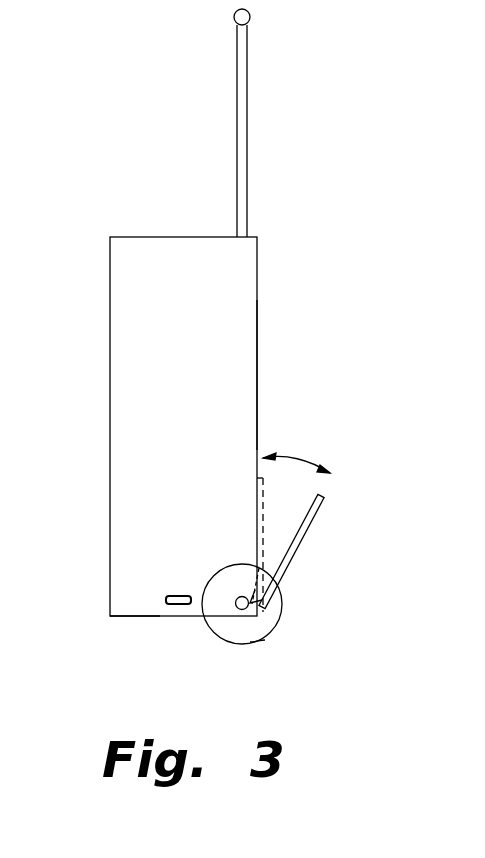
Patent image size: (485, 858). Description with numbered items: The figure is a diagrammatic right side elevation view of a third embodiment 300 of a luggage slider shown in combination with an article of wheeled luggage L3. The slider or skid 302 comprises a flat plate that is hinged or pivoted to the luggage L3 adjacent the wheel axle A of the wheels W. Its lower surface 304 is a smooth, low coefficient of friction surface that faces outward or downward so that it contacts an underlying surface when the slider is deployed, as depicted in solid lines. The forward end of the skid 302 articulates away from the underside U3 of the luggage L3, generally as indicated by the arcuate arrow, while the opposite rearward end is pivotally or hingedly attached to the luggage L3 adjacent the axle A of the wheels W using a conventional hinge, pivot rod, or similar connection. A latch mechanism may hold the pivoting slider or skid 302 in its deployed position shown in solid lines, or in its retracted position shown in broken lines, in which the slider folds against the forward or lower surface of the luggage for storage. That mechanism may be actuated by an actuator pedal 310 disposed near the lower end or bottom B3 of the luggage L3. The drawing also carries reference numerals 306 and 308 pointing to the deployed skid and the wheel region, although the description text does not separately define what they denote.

The third embodiment of the luggage slider 300 is at (366, 360).
The slider or skid 302 is at (295, 531).
The lower surface 304 is at (283, 571).
The lever rotation path 306 is at (263, 486).
The wheel housing 308 is at (278, 643).
The actuator pedal 310 is at (165, 600).
The article of wheeled luggage L3 is at (189, 325).
The underside U3 is at (257, 394).
The bottom B3 is at (122, 617).
The wheel axle A is at (238, 597).
The wheels W is at (203, 628).